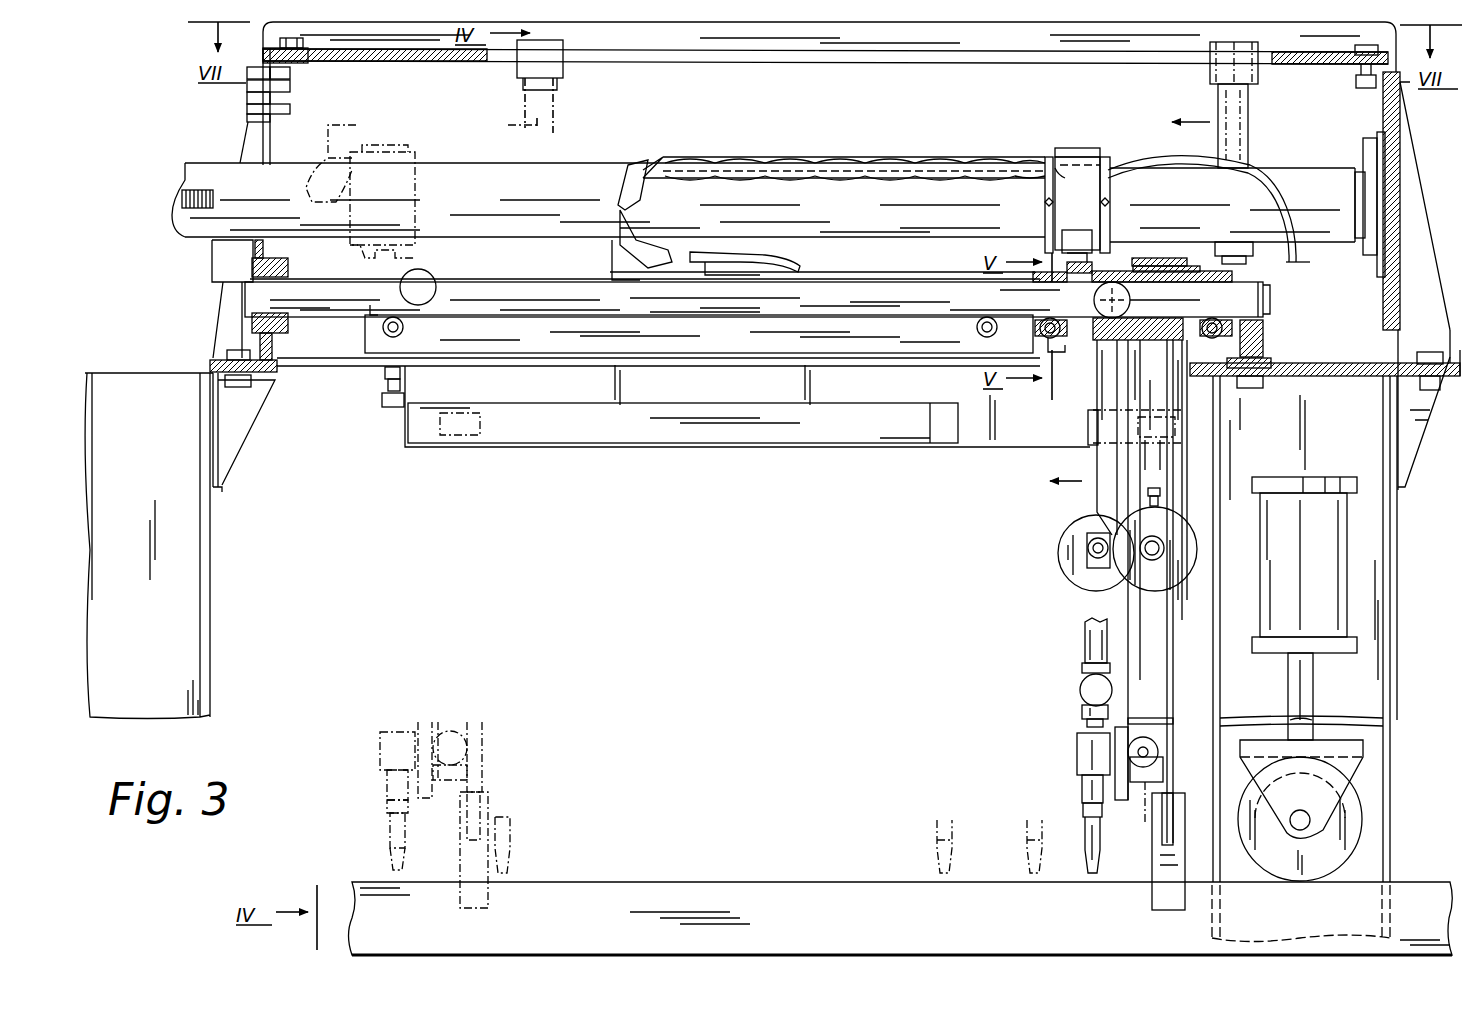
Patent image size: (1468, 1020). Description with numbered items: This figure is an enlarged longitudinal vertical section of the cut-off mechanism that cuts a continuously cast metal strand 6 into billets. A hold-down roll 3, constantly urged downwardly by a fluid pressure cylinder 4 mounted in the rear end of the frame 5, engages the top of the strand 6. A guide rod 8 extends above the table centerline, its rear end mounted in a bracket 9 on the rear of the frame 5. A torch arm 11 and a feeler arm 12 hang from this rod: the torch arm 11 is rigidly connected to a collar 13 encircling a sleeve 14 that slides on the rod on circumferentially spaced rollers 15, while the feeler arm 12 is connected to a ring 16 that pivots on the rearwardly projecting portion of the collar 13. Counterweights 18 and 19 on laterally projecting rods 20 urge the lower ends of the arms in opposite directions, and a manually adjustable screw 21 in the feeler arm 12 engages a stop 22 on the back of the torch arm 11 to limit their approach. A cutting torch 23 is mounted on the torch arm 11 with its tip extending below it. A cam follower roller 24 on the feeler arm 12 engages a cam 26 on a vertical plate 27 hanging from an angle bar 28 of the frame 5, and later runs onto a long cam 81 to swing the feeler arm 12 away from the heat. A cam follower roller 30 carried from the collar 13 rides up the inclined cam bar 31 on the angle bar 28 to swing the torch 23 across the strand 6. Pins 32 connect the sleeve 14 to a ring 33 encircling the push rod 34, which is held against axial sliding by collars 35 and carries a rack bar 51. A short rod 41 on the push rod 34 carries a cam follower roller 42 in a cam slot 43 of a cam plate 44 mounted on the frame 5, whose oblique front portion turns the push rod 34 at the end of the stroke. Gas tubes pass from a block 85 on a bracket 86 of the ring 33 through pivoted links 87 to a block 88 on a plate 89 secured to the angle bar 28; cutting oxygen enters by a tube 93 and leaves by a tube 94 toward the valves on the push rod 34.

The hold-down roll 3 is at (1352, 820).
The fluid pressure cylinder 4 is at (1308, 500).
The frame 5 is at (1398, 540).
The continuously cast metal strand 6 is at (762, 894).
The guide rod 8 is at (1262, 300).
The bracket 9 is at (1263, 347).
The torch arm 11 is at (1118, 617).
The feeler arm 12 is at (1200, 734).
The collar 13 is at (1112, 268).
The sleeve 14 is at (1030, 278).
The rollers 15 is at (1058, 340).
The ring 16 is at (1165, 258).
The counterweight 18 is at (1062, 560).
The counterweight 19 is at (1178, 580).
The rods 20 is at (1158, 546).
The manually adjustable screw 21 is at (1157, 751).
The stop 22 is at (1145, 806).
The cutting torch 23 is at (1085, 790).
The cam follower roller 24 is at (1165, 460).
The cam 26 is at (1088, 425).
The vertical plate 27 is at (992, 444).
The angle bar 28 is at (345, 364).
The cam follower roller 30 is at (1130, 300).
The cam bar 31 is at (645, 345).
The pins 32 is at (1075, 270).
The ring 33 is at (1060, 218).
The push rod 34 is at (560, 175).
The collars 35 is at (1045, 190).
The short rod 41 is at (1240, 140).
The cam follower roller 42 is at (1258, 76).
The cam slot 43 is at (862, 63).
The cam plate 44 is at (410, 62).
The rack bar 51 is at (190, 195).
The long cam 81 is at (635, 430).
The block 85 is at (1040, 170).
The bracket 86 is at (1085, 152).
The pivoted links 87 is at (798, 155).
The block 88 is at (690, 255).
The plate 89 is at (575, 275).
The tube 93 is at (792, 257).
The tube 94 is at (1285, 194).